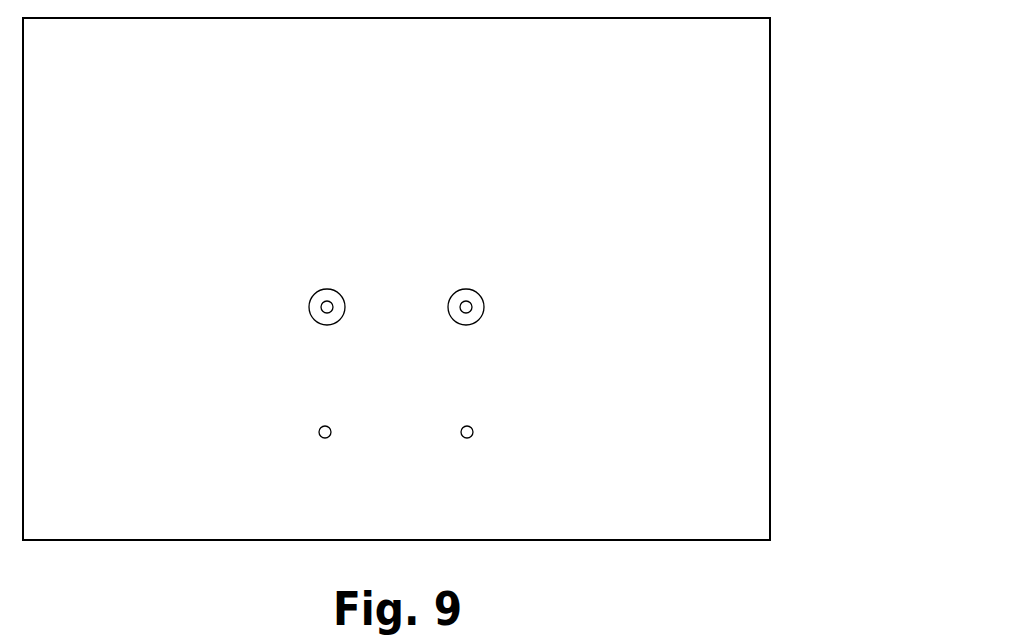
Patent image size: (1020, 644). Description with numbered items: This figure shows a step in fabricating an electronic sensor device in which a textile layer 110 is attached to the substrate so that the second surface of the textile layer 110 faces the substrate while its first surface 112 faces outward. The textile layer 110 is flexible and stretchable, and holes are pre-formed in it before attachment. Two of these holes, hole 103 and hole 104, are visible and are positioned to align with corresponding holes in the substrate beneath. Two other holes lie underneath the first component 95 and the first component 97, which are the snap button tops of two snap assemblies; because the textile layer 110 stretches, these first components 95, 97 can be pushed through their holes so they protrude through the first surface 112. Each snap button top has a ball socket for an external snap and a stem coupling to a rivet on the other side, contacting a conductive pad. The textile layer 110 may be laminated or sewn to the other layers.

The textile layer 110 is at (769, 208).
The first surface 112 is at (742, 132).
The first component 95 is at (316, 298).
The first component 97 is at (477, 297).
The hole 103 is at (463, 438).
The hole 104 is at (322, 438).